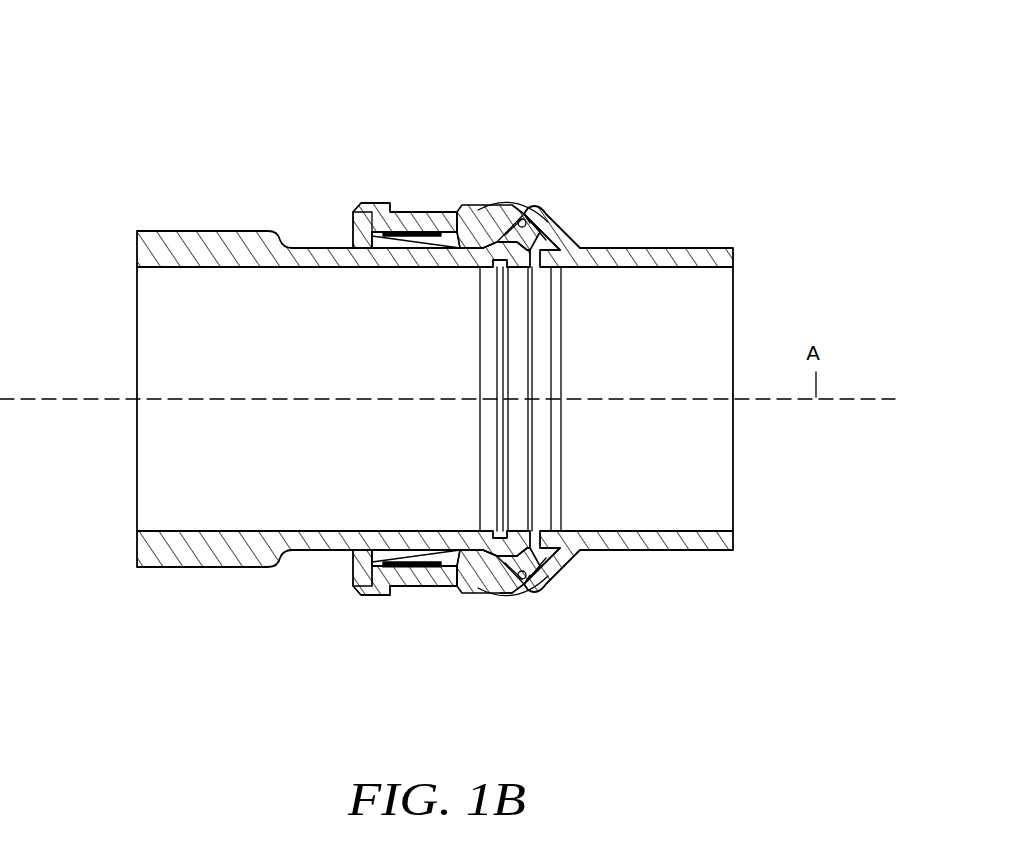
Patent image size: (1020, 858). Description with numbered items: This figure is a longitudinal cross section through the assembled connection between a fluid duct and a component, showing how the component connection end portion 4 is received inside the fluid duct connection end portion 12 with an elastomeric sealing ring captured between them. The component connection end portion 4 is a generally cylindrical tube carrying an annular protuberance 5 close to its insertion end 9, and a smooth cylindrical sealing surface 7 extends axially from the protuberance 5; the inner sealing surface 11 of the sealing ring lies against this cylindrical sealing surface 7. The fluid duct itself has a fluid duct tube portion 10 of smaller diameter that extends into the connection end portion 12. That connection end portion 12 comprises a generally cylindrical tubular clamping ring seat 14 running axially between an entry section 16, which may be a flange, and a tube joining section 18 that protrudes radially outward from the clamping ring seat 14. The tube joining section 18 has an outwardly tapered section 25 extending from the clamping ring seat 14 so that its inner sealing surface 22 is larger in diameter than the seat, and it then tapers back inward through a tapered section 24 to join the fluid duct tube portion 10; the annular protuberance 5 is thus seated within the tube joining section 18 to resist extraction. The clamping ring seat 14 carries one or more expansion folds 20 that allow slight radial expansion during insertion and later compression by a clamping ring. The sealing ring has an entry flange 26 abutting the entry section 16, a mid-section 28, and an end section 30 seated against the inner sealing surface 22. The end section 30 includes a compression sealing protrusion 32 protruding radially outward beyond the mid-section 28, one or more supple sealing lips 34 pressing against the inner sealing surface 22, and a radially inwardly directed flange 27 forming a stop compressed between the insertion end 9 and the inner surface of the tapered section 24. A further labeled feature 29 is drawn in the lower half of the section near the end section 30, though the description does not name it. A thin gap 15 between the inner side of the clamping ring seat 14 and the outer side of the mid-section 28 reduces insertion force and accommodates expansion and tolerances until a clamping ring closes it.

The component connection end portion 4 is at (290, 240).
The fluid duct tube portion 10 is at (735, 255).
The inner sealing surface 11 is at (384, 553).
The clamping ring seat 14 is at (400, 215).
The entry section 16 is at (378, 210).
The thin gap 15 is at (436, 232).
The entry flange 26 is at (357, 232).
The expansion fold 20 is at (470, 215).
The mid-section 28 is at (457, 225).
The compression sealing protrusion 32 is at (499, 232).
The end section 30 is at (527, 212).
The fluid duct connection end portion 12 is at (531, 204).
The tube joining section 18 is at (550, 198).
The inner sealing surface 22 is at (530, 223).
The sealing lip 34 is at (540, 233).
The tapered section 24 is at (553, 243).
The radially inwardly directed flange 27 is at (635, 248).
The cylindrical sealing surface 7 is at (422, 568).
The ring lip 29 is at (511, 596).
The outwardly tapered section 25 is at (497, 593).
The annular protuberance 5 is at (528, 555).
The insertion end 9 is at (551, 515).